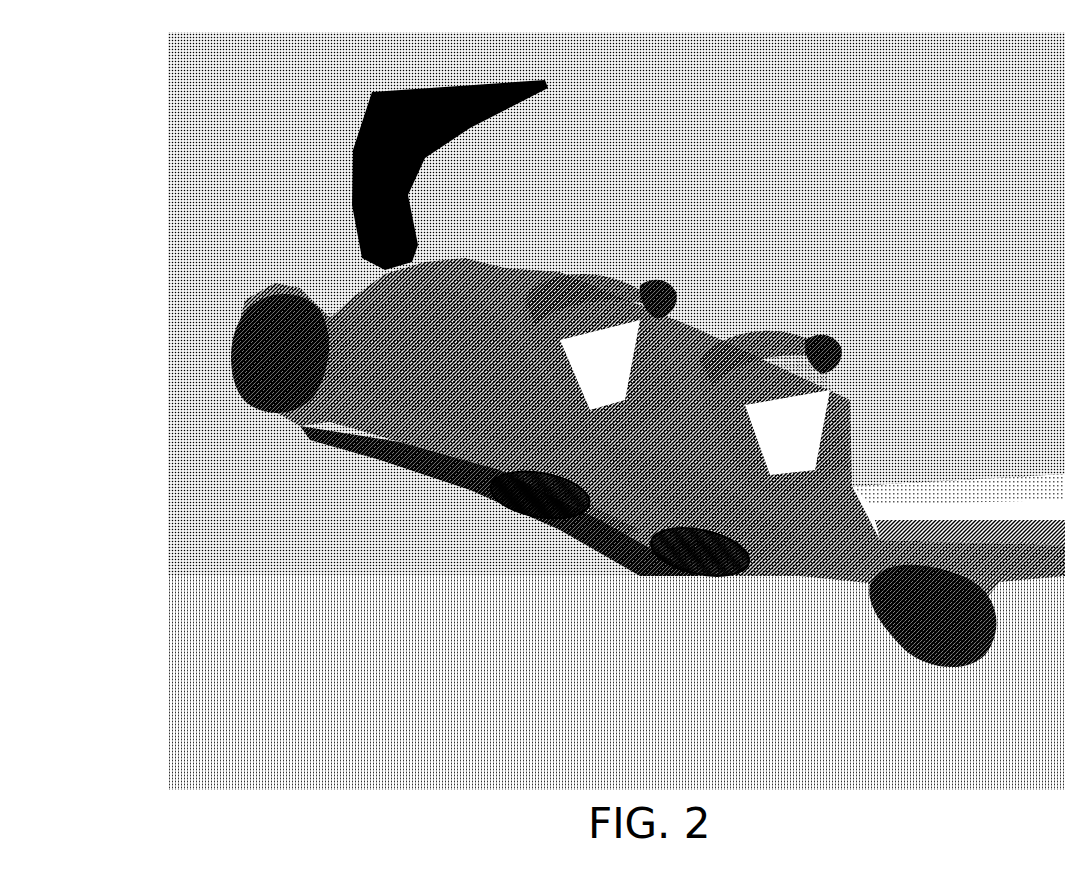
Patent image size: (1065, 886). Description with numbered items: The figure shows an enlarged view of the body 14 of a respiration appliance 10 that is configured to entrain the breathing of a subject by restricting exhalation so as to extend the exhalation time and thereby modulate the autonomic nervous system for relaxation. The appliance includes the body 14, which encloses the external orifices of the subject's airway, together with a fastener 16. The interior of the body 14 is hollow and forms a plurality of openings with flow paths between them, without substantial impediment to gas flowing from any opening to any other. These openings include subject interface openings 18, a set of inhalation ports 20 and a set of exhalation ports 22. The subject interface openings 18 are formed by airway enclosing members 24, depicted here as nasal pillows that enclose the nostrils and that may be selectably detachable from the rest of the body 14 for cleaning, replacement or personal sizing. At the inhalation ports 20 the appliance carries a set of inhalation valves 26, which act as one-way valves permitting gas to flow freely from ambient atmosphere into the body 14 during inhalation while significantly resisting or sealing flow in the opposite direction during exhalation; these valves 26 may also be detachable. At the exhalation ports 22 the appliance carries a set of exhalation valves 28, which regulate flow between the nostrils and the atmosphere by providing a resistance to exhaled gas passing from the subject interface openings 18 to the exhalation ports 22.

The respiration appliance 10 is at (581, 411).
The body 14 is at (465, 452).
The fastener 16 is at (370, 108).
The subject interface openings 18 is at (660, 285).
The inhalation ports 20 is at (596, 502).
The exhalation ports 22 is at (328, 318).
The airway enclosing members 24 is at (585, 278).
The inhalation valves 26 is at (518, 518).
The exhalation valves 28 is at (235, 373).